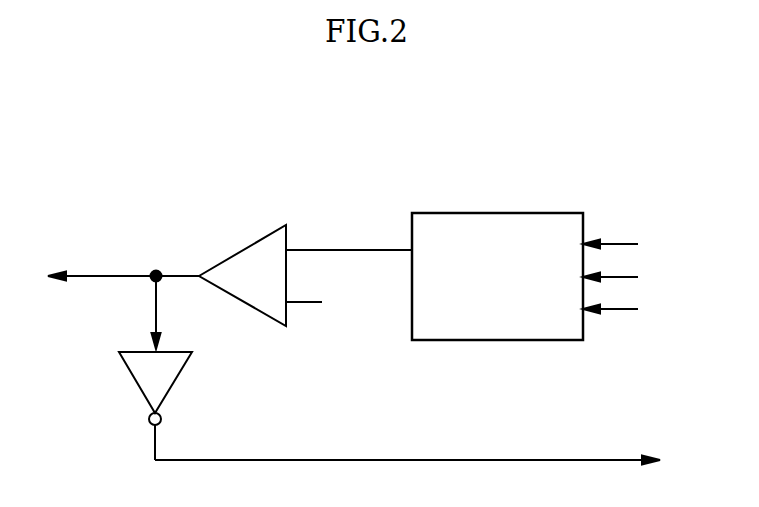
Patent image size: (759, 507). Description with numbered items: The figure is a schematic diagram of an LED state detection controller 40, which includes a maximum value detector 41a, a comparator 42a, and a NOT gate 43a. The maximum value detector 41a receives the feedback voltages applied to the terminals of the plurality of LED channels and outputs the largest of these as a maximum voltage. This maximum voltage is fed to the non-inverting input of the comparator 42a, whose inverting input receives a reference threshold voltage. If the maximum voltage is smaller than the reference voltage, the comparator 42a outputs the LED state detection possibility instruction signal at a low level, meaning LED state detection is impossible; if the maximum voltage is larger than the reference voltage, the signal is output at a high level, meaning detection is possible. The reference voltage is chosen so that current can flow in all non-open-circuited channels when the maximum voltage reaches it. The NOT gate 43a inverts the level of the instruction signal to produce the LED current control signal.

The LED state detection controller 40 is at (371, 138).
The maximum value detector 41a is at (497, 213).
The comparator 42a is at (242, 249).
The NOT gate 43a is at (176, 380).